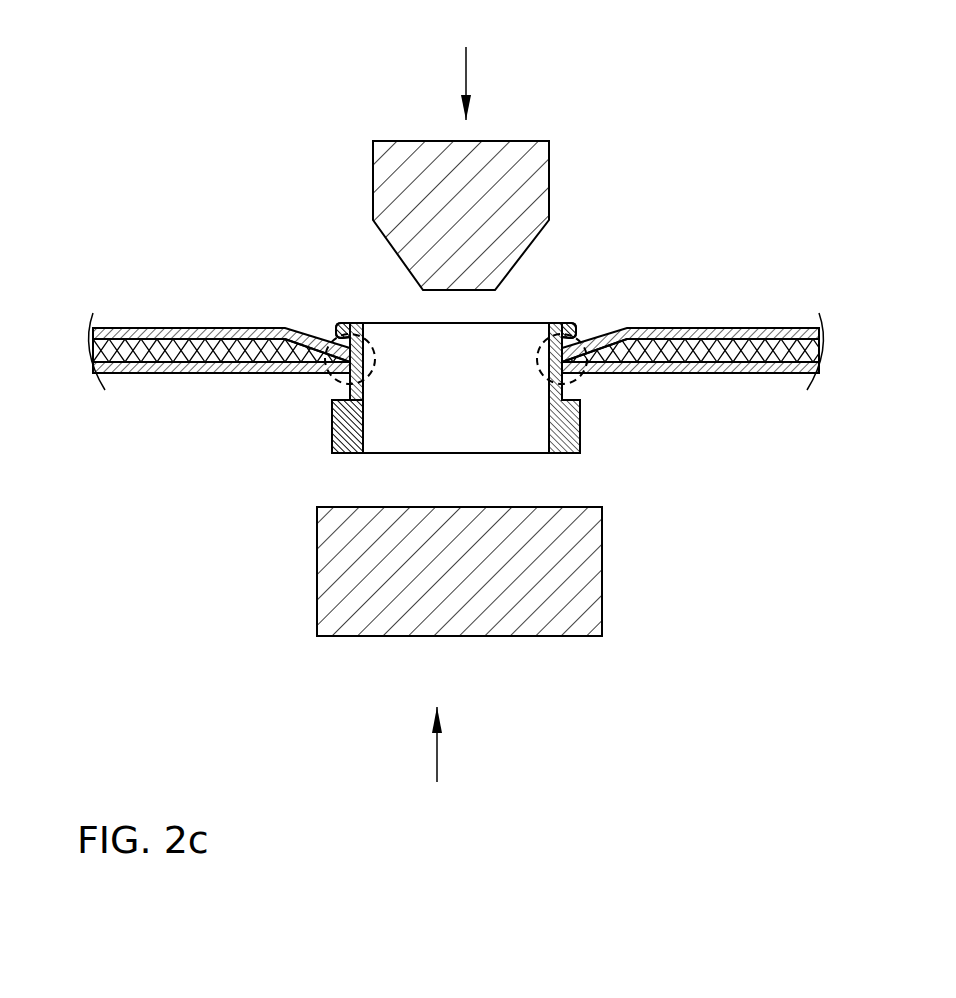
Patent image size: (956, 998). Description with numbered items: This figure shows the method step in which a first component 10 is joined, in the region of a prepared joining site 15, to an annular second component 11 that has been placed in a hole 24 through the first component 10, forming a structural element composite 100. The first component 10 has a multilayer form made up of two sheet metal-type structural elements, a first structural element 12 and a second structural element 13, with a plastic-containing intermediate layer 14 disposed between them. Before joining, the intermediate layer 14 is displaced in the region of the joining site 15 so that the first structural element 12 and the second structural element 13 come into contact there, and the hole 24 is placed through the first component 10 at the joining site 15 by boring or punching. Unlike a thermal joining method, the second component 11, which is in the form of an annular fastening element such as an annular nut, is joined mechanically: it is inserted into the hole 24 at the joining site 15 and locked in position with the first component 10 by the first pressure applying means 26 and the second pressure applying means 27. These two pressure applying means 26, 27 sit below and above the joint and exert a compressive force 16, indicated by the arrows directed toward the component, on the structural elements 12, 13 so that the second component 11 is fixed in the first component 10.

The first component 10 is at (456, 353).
The second component 11 is at (343, 442).
The first structural element of the first component 12 is at (193, 369).
The second structural element of the first component 13 is at (132, 333).
The intermediate layer 14 is at (182, 350).
The joining site 15 is at (335, 334).
The compressive force 16 is at (466, 69).
The hole 24 is at (518, 335).
The first pressure applying means 26 is at (588, 568).
The second pressure applying means 27 is at (538, 158).
The structural element composite 100 is at (660, 420).